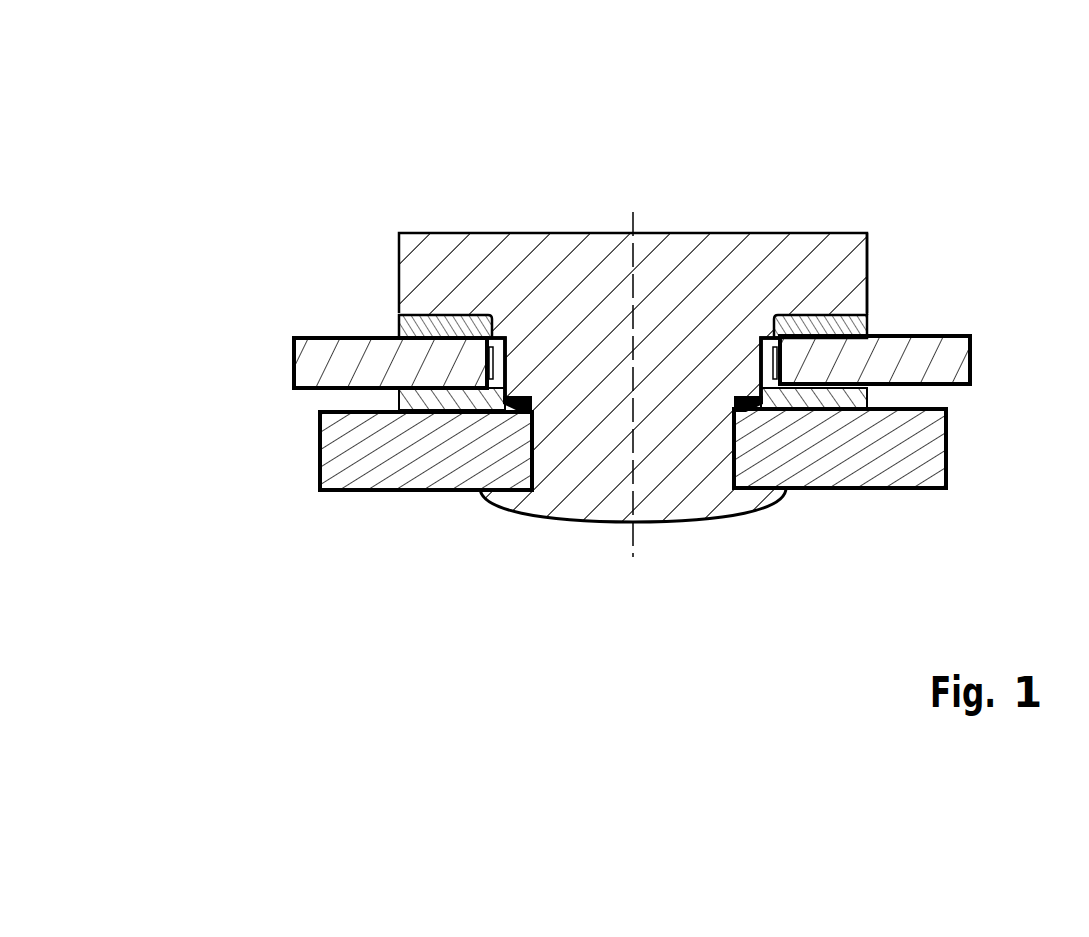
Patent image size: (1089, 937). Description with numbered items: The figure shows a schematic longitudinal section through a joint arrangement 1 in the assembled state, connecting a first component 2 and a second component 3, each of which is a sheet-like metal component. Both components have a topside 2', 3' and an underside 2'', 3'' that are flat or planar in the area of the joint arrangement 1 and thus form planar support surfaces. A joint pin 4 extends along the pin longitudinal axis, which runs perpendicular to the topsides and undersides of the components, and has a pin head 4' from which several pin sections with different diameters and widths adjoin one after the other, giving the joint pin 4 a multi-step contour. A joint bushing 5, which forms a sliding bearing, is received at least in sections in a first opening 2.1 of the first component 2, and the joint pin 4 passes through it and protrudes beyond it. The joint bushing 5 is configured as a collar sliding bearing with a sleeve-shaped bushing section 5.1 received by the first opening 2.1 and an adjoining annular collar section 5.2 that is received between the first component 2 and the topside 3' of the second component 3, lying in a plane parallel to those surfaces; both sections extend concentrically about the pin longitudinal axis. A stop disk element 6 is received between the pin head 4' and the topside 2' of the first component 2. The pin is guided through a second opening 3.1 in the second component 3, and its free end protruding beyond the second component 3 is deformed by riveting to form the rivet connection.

The joint arrangement 1 is at (917, 130).
The first component 2 is at (555, 340).
The topside of the first component 2' is at (378, 286).
The underside of the first component 2'' is at (365, 443).
The first opening 2.1 is at (470, 368).
The second component 3 is at (688, 453).
The topside of the second component 3' is at (899, 369).
The underside of the second component 3'' is at (848, 528).
The second opening 3.1 is at (750, 452).
The joint pin 4 is at (633, 297).
The pin head 4' is at (938, 243).
The joint bushing 5 is at (520, 362).
The bushing section 5.1 is at (505, 335).
The annular collar section 5.2 is at (457, 400).
The stop disk element 6 is at (810, 300).